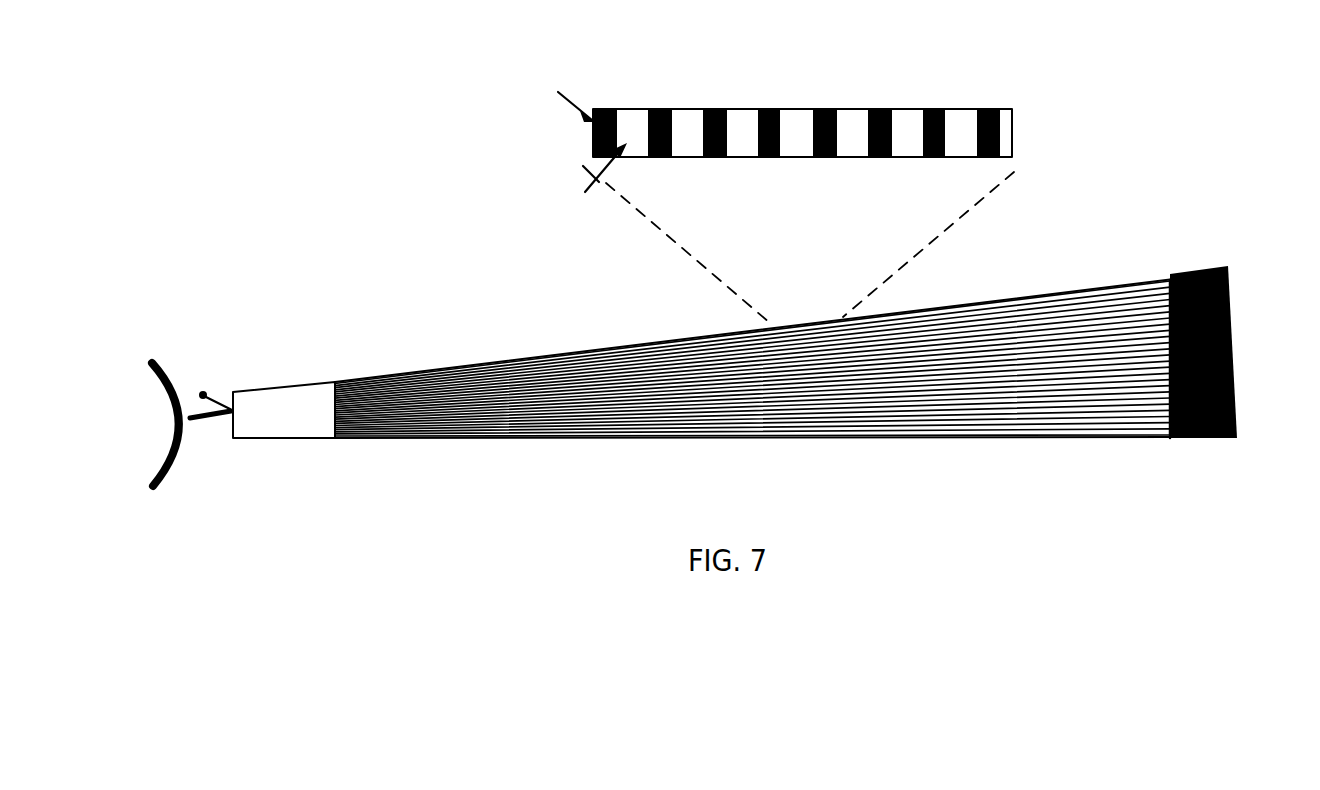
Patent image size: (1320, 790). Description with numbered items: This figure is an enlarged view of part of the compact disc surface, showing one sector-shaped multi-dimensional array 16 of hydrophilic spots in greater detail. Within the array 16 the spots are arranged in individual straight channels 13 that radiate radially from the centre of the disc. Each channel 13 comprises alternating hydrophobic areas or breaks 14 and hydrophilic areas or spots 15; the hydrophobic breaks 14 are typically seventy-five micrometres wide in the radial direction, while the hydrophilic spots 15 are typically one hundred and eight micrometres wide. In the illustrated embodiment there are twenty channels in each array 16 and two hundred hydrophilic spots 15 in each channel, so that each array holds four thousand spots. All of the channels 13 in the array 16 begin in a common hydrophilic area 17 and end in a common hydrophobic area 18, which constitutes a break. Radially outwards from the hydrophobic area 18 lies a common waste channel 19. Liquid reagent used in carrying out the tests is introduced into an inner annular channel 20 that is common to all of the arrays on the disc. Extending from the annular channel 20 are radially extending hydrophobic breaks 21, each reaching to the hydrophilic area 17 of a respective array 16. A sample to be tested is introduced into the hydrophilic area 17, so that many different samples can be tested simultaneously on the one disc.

The straight channel 13 is at (1082, 287).
The hydrophobic break 14 is at (660, 108).
The hydrophilic spot 15 is at (638, 147).
The sector-shaped multi-dimensional array 16 is at (1122, 253).
The common hydrophilic area 17 is at (300, 420).
The common hydrophobic area 18 is at (1177, 440).
The common waste channel 19 is at (1237, 362).
The inner annular channel 20 is at (185, 473).
The radially extending hydrophobic break 21 is at (208, 425).